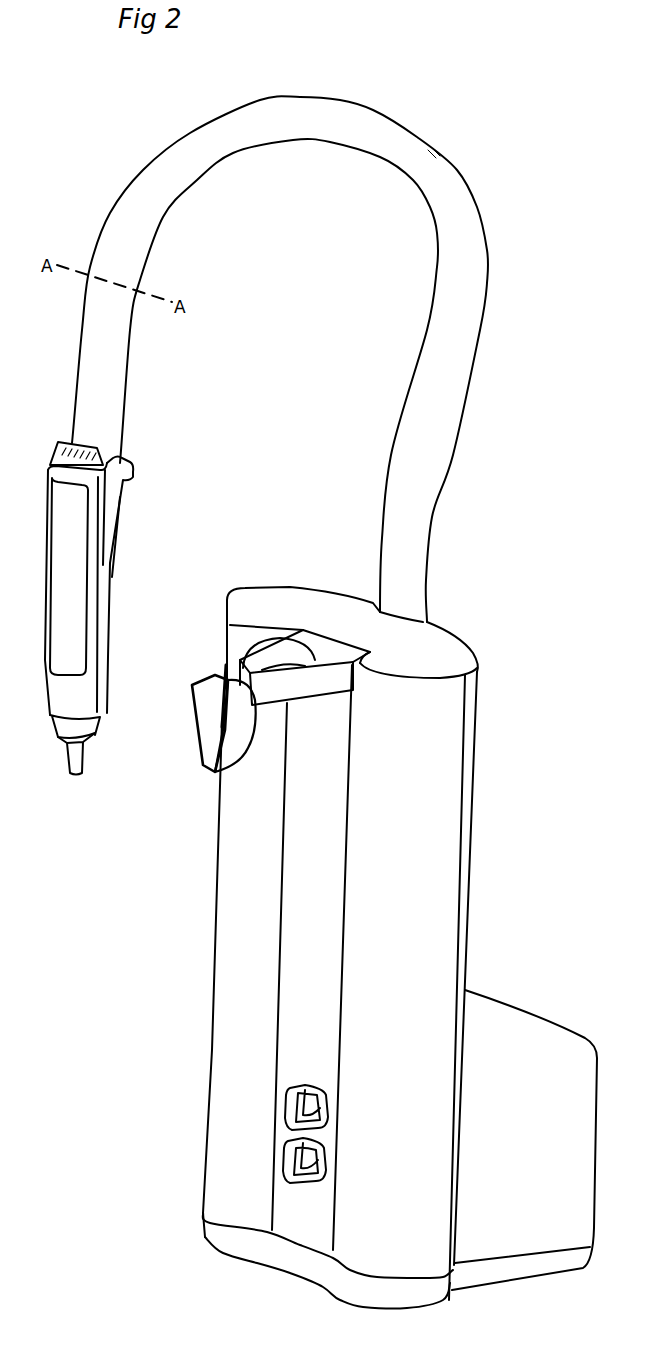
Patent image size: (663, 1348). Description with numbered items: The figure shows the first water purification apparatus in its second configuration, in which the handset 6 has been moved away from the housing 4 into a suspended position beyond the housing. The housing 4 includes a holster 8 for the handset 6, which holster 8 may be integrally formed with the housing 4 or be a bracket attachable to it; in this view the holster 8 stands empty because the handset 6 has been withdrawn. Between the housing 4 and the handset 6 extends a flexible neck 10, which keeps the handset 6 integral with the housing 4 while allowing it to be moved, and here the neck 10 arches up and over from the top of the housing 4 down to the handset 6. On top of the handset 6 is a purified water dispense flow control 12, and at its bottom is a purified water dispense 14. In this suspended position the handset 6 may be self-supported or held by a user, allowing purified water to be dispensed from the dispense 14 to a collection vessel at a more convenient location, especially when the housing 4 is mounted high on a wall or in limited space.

The housing 4 is at (476, 828).
The handset 6 is at (68, 605).
The holster 8 is at (233, 767).
The flexible neck 10 is at (458, 170).
The purified water dispense flow control 12 is at (65, 442).
The purified water dispense 14 is at (75, 777).